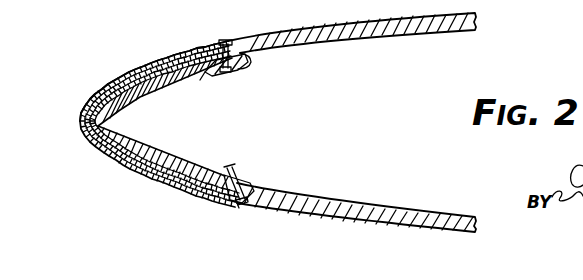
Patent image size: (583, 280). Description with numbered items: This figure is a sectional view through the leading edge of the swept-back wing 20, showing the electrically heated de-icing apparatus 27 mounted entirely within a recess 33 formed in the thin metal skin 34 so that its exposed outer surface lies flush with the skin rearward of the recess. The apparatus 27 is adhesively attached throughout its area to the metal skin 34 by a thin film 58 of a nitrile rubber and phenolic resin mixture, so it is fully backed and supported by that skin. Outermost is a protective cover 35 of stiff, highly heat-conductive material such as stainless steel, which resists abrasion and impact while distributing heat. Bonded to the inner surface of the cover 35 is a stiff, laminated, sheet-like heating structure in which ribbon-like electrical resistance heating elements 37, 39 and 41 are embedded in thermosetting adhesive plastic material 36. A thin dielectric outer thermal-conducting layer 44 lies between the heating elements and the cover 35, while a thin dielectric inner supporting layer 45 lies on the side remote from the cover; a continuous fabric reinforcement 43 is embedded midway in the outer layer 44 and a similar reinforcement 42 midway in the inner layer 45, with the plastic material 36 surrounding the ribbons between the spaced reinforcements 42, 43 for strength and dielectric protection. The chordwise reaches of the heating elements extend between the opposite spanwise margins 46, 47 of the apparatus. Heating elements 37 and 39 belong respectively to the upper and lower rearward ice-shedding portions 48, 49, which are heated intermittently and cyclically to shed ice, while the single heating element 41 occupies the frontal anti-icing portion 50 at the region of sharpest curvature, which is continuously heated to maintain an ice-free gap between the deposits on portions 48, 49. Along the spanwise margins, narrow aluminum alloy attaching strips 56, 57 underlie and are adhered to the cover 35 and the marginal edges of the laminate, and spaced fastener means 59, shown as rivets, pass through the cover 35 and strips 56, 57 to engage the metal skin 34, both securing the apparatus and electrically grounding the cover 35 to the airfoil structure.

The swept-back wing 20 is at (415, 232).
The electrically heated apparatus 27 is at (95, 162).
The recess 33 is at (183, 47).
The metal skin 34 is at (392, 33).
The protective cover 35 is at (111, 88).
The thermosetting adhesive plastic material 36 is at (98, 126).
The heating element 37 is at (166, 57).
The heating element 39 is at (146, 188).
The heating element 41 is at (80, 132).
The reinforcement 42 is at (212, 72).
The reinforcement 43 is at (94, 148).
The outer thermal-conducting layer 44 is at (153, 175).
The inner supporting layer 45 is at (172, 84).
The spanwise-extending margin 46 is at (231, 41).
The spanwise-extending margin 47 is at (237, 204).
The rearward ice-shedding portion 48 is at (141, 66).
The rearward ice-shedding portion 49 is at (137, 174).
The frontal anti-icing portion 50 is at (84, 110).
The attaching strip 56 is at (250, 58).
The attaching strip 57 is at (251, 182).
The thin film 58 is at (151, 152).
The fastener means 59 is at (233, 72).